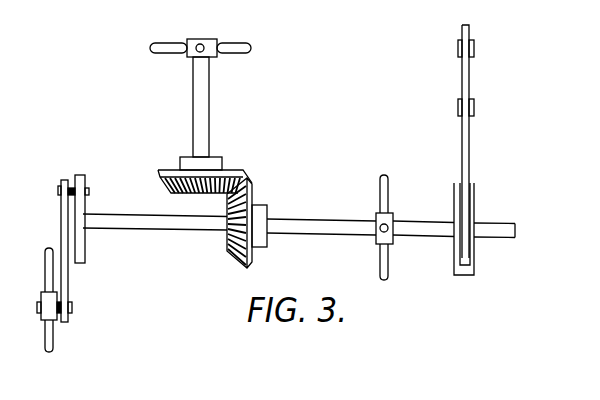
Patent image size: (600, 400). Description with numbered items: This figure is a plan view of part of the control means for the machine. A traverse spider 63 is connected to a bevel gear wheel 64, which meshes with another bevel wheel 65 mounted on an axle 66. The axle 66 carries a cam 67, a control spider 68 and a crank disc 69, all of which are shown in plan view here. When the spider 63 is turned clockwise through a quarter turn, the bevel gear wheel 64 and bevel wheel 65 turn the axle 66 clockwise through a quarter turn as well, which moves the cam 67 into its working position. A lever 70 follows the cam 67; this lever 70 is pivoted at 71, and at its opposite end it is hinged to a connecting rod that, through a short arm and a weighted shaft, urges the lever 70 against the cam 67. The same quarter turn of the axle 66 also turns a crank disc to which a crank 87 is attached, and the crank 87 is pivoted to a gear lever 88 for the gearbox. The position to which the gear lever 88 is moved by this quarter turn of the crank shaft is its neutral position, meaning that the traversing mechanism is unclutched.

The spider 63 is at (250, 46).
The bevel gear wheel 64 is at (226, 172).
The bevel wheel 65 is at (244, 203).
The axle 66 is at (142, 221).
The cam 67 is at (471, 221).
The control spider 68 is at (388, 202).
The crank disc 69 is at (78, 233).
The lever 70 is at (468, 140).
The pivot 71 is at (475, 108).
The crank 87 is at (62, 237).
The gear lever 88 is at (49, 284).